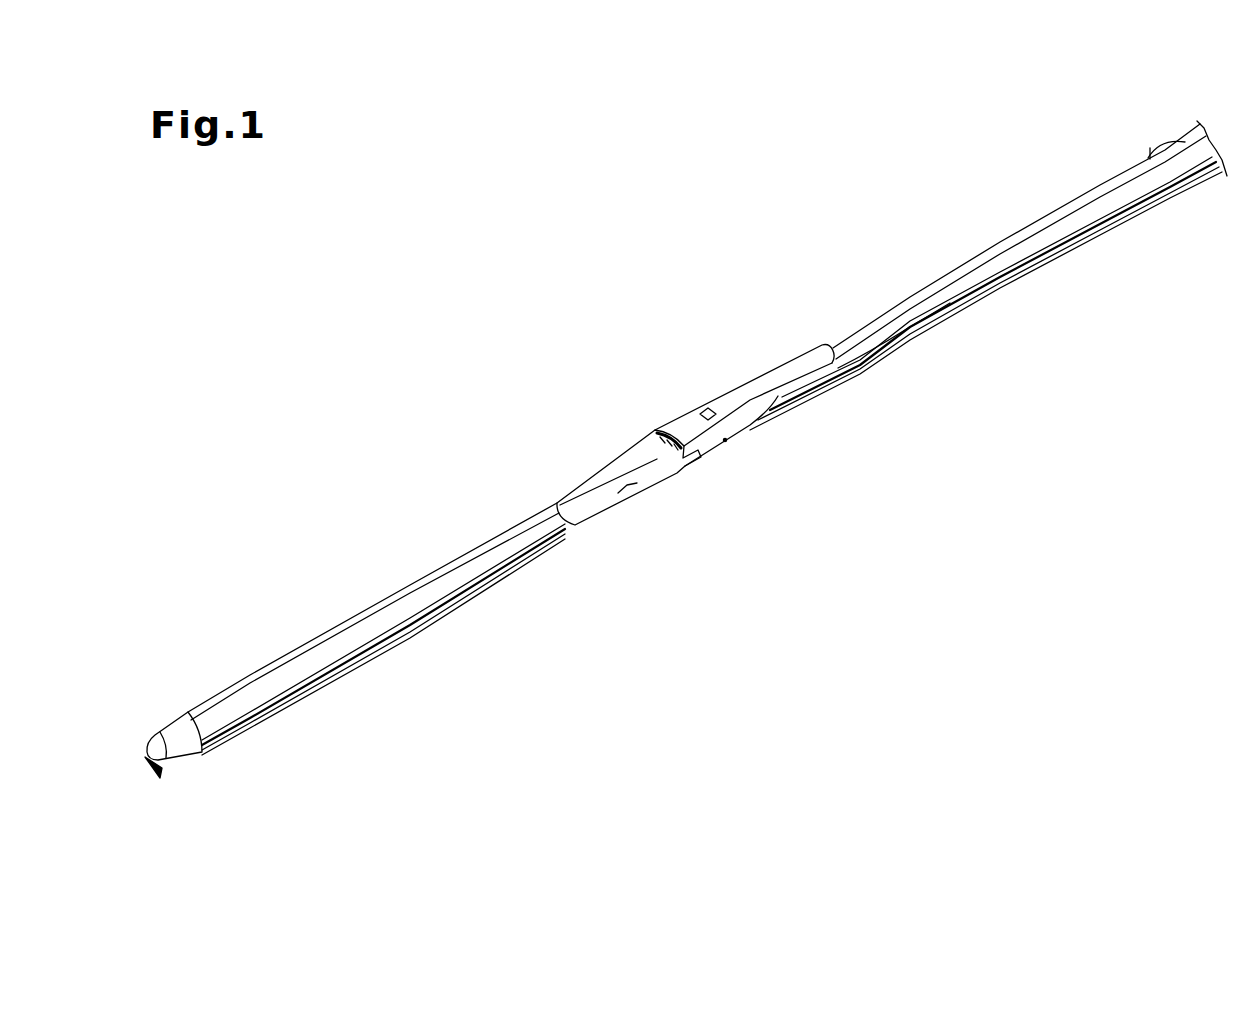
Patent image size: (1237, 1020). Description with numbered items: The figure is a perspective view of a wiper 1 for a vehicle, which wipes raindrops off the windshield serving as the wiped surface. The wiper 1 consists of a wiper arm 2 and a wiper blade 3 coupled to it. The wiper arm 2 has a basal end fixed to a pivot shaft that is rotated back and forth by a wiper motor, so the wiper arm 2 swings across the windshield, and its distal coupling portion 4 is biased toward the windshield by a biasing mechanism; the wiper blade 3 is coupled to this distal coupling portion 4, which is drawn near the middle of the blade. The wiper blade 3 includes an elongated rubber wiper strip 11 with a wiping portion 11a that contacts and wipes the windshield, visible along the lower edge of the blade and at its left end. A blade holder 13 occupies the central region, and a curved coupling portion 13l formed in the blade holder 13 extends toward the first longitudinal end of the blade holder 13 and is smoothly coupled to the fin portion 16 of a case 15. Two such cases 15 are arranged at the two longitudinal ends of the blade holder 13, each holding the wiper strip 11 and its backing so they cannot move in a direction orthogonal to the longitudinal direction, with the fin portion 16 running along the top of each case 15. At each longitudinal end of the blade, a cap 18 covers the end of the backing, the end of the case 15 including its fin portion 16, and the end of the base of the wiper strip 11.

The wiper 1 is at (571, 330).
The wiper arm 2 is at (953, 282).
The wiper blade 3 is at (438, 572).
The distal coupling portion 4 is at (718, 397).
The wiper strip 11 is at (263, 717).
The wiping portion 11a is at (156, 776).
The blade holder 13 is at (647, 432).
The curved coupling portion 13l is at (597, 492).
The case 15 is at (488, 584).
The fin portion 16 is at (492, 556).
The cap 18 is at (178, 742).